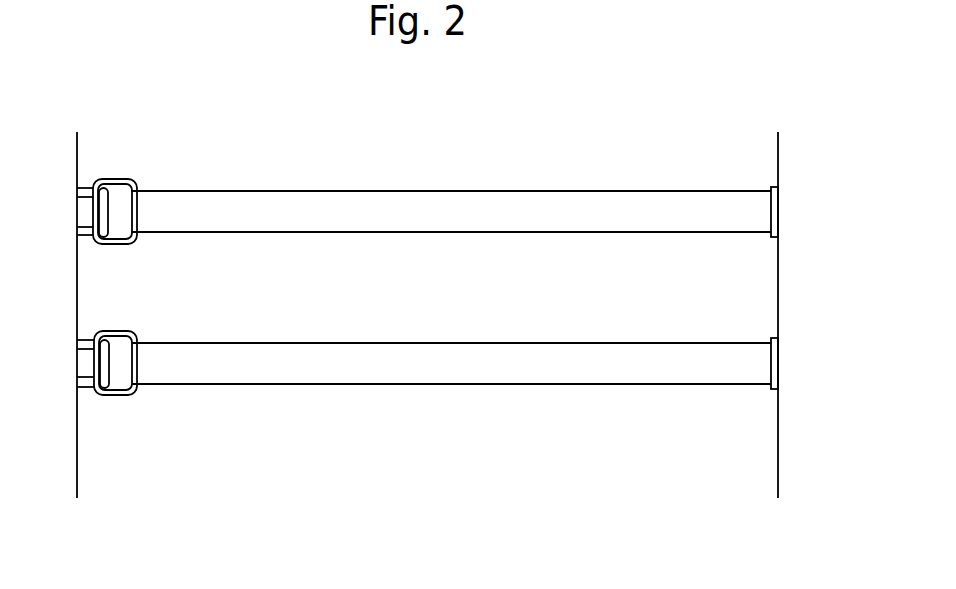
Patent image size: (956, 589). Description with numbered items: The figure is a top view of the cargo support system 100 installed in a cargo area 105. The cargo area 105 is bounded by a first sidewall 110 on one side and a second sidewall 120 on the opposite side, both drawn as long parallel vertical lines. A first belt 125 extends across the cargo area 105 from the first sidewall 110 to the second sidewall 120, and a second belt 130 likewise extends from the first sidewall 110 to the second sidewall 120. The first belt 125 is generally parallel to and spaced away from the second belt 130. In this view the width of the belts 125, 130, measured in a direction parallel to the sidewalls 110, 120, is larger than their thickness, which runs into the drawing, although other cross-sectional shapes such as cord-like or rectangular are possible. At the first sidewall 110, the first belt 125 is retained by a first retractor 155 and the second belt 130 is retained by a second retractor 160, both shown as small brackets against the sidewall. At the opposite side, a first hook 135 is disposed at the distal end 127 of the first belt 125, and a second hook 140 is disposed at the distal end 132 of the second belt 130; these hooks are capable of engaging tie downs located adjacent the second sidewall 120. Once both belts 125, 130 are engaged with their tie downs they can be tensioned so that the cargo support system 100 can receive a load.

The cargo support system 100 is at (290, 152).
The cargo area 105 is at (317, 454).
The first sidewall 110 is at (778, 283).
The second sidewall 120 is at (77, 284).
The first belt 125 is at (397, 191).
The distal end 127 is at (153, 182).
The second belt 130 is at (397, 343).
The distal end 132 is at (153, 395).
The first hook 135 is at (113, 179).
The second hook 140 is at (110, 396).
The first retractor 155 is at (771, 212).
The second retractor 160 is at (771, 364).